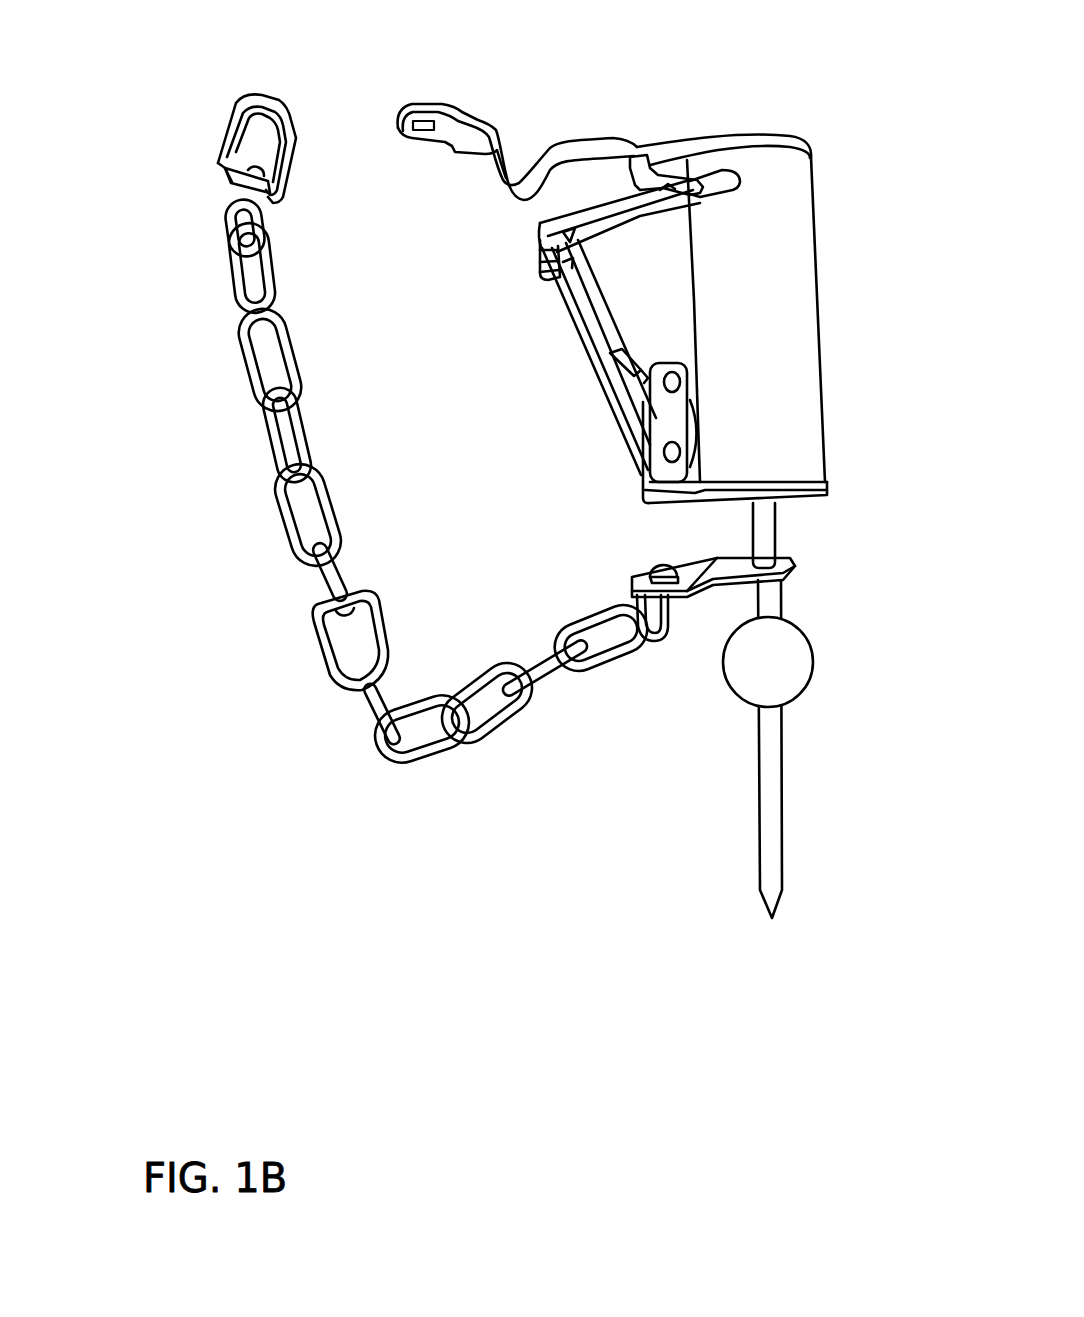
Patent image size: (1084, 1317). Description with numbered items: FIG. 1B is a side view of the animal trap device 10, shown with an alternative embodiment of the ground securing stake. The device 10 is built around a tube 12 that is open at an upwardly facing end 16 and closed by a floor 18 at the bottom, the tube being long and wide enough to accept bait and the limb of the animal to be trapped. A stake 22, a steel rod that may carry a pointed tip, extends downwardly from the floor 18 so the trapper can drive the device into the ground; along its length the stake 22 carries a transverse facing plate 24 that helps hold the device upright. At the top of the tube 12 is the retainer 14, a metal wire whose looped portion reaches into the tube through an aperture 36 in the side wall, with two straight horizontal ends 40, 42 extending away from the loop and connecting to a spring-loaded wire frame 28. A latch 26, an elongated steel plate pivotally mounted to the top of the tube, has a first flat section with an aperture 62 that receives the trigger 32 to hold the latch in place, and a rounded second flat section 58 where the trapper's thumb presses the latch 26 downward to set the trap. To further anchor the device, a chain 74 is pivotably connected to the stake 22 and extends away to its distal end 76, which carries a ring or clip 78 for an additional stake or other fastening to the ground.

The device 10 is at (296, 790).
The tube 12 is at (842, 182).
The retainer 14 is at (524, 265).
The upwardly facing end 16 is at (744, 110).
The floor 18 is at (790, 498).
The stake 22 is at (772, 808).
The transverse facing plate 24 is at (757, 670).
The latch 26 is at (552, 125).
The spring-loaded wire frame 28 is at (590, 375).
The trigger 32 is at (641, 384).
The aperture 36 is at (691, 170).
The end 40 is at (586, 218).
The end 42 is at (600, 247).
The second flat section 58 is at (398, 146).
The aperture 62 is at (424, 120).
The chain 74 is at (264, 477).
The distal end 76 is at (190, 240).
The ring or clip 78 is at (277, 96).